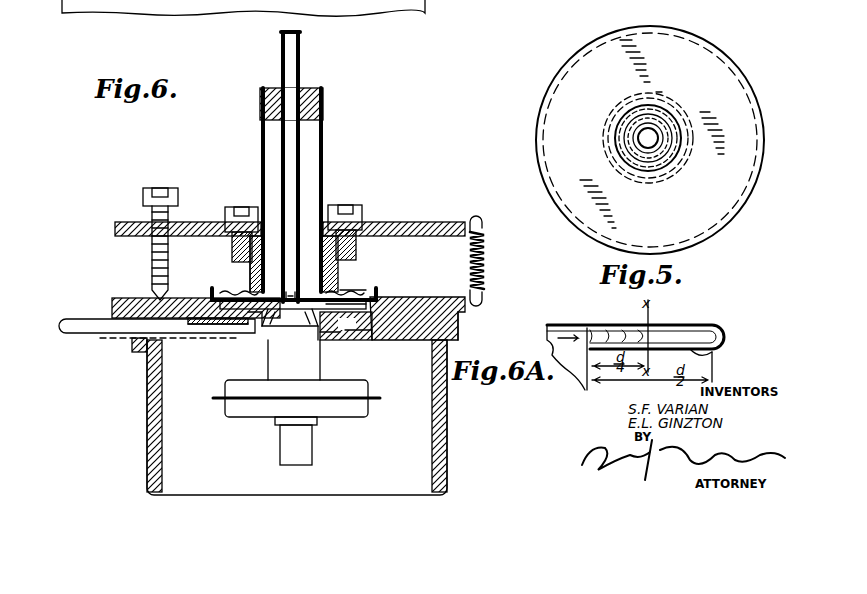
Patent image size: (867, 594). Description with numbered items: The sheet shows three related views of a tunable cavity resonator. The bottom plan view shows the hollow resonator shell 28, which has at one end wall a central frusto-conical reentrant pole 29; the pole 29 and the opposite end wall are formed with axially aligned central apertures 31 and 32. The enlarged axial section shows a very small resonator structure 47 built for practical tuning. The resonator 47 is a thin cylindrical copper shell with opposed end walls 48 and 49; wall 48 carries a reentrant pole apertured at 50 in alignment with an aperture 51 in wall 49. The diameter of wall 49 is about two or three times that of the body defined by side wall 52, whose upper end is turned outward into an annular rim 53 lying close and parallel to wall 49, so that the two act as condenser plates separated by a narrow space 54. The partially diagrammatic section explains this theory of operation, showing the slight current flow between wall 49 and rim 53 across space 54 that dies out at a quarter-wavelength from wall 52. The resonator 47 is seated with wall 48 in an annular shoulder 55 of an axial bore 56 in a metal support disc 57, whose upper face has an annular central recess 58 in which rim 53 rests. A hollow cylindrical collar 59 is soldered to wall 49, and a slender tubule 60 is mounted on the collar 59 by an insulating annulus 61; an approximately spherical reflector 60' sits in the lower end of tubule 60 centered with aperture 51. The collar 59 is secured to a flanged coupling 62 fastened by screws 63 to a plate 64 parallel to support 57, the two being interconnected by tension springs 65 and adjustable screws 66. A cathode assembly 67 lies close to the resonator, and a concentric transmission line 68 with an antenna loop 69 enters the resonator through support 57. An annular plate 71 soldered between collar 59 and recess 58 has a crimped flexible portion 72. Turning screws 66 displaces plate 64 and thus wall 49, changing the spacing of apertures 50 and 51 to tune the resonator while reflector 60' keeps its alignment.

In FIG. 5, the resonator 28 is at (762, 108).
In FIG. 5, the reentrant pole 29 is at (622, 112).
In FIG. 5, the central aperture 31 is at (650, 146).
In FIG. 5, the central aperture 32 is at (652, 128).
In FIG. 6, the resonator structure 47 is at (272, 345).
In FIG. 6, the end wall 48 is at (258, 340).
In FIG. 6, the end wall 49 is at (262, 286).
In FIG. 6A, the end wall 49 is at (700, 325).
In FIG. 6, the aperture 50 is at (280, 326).
In FIG. 6, the aperture 51 is at (258, 262).
In FIG. 6, the side wall 52 is at (346, 326).
In FIG. 6A, the side wall 52 is at (570, 376).
In FIG. 6, the annular rim 53 is at (346, 342).
In FIG. 6A, the annular rim 53 is at (716, 352).
In FIG. 6, the space 54 is at (372, 300).
In FIG. 6A, the space 54 is at (718, 327).
In FIG. 6, the annular shoulder 55 is at (340, 340).
In FIG. 6, the axial bore 56 is at (325, 350).
In FIG. 6, the support disc 57 is at (462, 330).
In FIG. 6, the annular central recess 58 is at (418, 299).
In FIG. 6, the collar 59 is at (262, 148).
In FIG. 6, the tubule 60 is at (310, 167).
In FIG. 6, the reflector 60' is at (326, 281).
In FIG. 6, the insulating annulus 61 is at (260, 102).
In FIG. 6, the flanged coupling 62 is at (340, 246).
In FIG. 6, the screws 63 is at (355, 208).
In FIG. 6, the plate 64 is at (440, 222).
In FIG. 6, the tension springs 65 is at (488, 262).
In FIG. 6, the adjustable screws 66 is at (148, 188).
In FIG. 6, the cathode assembly 67 is at (348, 415).
In FIG. 6, the concentric transmission line 68 is at (110, 336).
In FIG. 6, the antenna loop 69 is at (236, 340).
In FIG. 6, the annular plate 71 is at (368, 303).
In FIG. 6, the crimped intermediate portion 72 is at (348, 295).